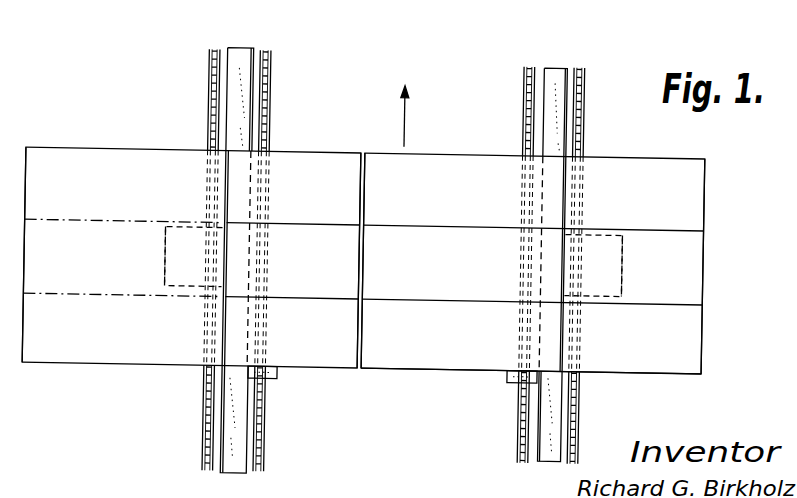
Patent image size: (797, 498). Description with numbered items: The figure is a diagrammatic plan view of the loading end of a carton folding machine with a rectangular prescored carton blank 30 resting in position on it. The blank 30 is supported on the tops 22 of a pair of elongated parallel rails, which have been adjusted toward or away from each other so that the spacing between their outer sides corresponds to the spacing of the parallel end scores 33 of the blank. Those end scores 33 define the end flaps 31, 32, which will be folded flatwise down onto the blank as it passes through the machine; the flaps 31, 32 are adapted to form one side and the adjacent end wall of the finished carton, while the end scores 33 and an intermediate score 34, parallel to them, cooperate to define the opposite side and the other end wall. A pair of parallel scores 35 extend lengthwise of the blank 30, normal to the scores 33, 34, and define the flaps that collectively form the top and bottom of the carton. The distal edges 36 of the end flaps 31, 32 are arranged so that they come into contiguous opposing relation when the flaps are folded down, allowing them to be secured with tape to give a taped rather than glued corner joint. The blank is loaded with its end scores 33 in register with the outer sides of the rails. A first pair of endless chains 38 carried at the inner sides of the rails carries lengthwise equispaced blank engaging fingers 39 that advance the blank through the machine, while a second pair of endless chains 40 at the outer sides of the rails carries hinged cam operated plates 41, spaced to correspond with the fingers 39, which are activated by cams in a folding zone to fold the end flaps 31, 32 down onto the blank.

The tops of rails 22 is at (238, 56).
The prescored rectangular carton blank 30 is at (427, 355).
The end flap 31 is at (60, 153).
The end flap 32 is at (695, 195).
The parallel end scores 33 is at (222, 254).
The intermediate score 34 is at (364, 267).
The parallel lengthwise scores 35 is at (421, 227).
The distal edges of end flaps 36 is at (24, 203).
The first pair of endless chains 38 is at (267, 448).
The blank engaging fingers 39 is at (280, 376).
The second pair of endless chains 40 is at (208, 88).
The hinged cam operated plates 41 is at (165, 239).